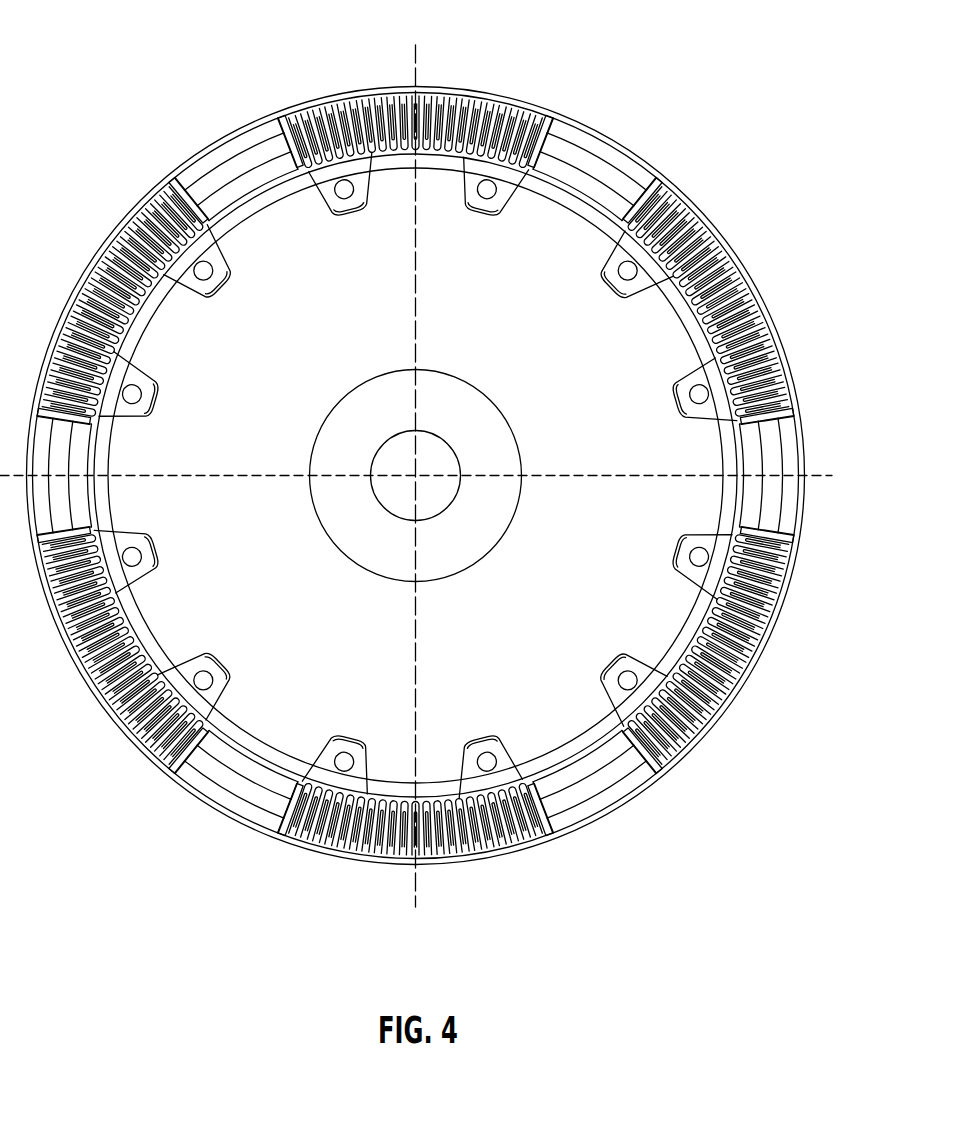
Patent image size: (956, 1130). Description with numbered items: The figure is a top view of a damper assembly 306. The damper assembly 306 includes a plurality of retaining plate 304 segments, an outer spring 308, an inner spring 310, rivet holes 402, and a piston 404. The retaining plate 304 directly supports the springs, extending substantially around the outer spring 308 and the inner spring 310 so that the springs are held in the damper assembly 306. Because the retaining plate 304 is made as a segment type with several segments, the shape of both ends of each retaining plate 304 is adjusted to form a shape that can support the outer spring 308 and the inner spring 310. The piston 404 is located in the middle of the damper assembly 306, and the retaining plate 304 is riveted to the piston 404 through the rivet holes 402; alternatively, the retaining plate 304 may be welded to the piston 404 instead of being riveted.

The retaining plate 304 is at (438, 88).
The damper assembly 306 is at (503, 863).
The outer spring 308 is at (653, 175).
The inner spring 310 is at (695, 230).
The rivet holes 402 is at (708, 395).
The piston 404 is at (707, 458).